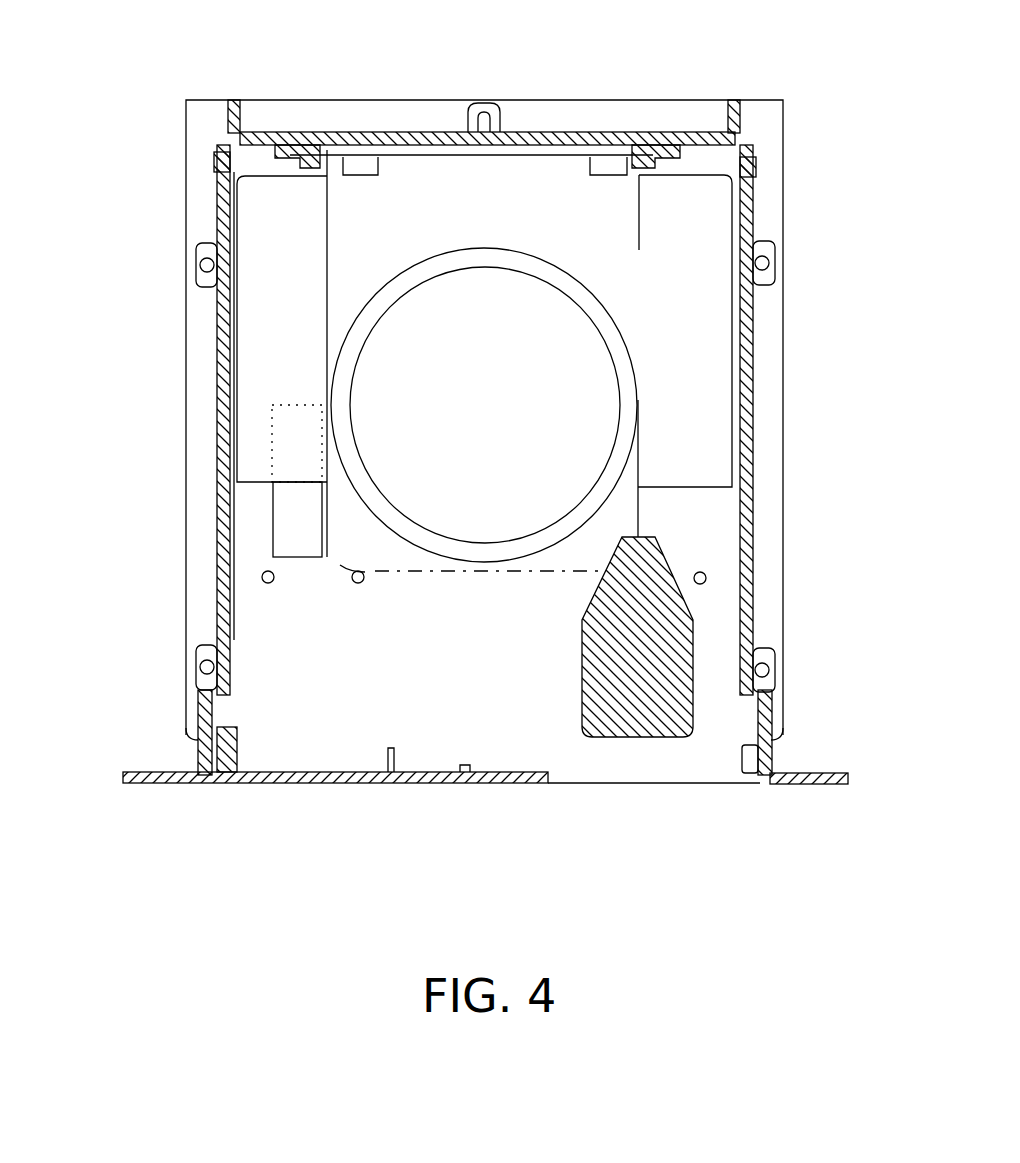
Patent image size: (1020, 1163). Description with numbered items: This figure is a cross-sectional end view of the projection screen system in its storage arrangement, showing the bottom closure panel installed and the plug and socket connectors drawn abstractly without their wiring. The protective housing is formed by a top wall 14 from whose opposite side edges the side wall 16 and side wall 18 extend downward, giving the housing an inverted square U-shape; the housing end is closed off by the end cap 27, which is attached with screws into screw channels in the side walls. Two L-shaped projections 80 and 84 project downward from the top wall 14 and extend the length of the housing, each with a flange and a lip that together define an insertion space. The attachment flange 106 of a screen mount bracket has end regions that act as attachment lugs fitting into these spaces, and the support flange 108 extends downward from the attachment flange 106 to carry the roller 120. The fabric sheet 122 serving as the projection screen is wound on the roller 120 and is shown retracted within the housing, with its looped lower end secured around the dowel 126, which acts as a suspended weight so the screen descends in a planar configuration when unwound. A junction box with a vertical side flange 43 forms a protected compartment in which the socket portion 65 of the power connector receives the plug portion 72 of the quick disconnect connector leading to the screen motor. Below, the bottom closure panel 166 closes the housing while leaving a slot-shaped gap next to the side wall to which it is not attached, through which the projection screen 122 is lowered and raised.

The top wall 14 is at (283, 133).
The attachment flange 106 is at (418, 155).
The end cap 27 is at (676, 115).
The L-shaped projection 80 is at (320, 165).
The L-shaped projection 84 is at (663, 165).
The support flange 108 is at (360, 242).
The fabric sheet 122 is at (618, 322).
The roller 120 is at (540, 400).
The side wall 16 is at (215, 355).
The vertical side flange 43 is at (697, 405).
The socket portion 65 is at (270, 453).
The side wall 18 is at (750, 470).
The plug portion 72 is at (272, 525).
The dowel 126 is at (670, 633).
The bottom closure panel 166 is at (338, 785).